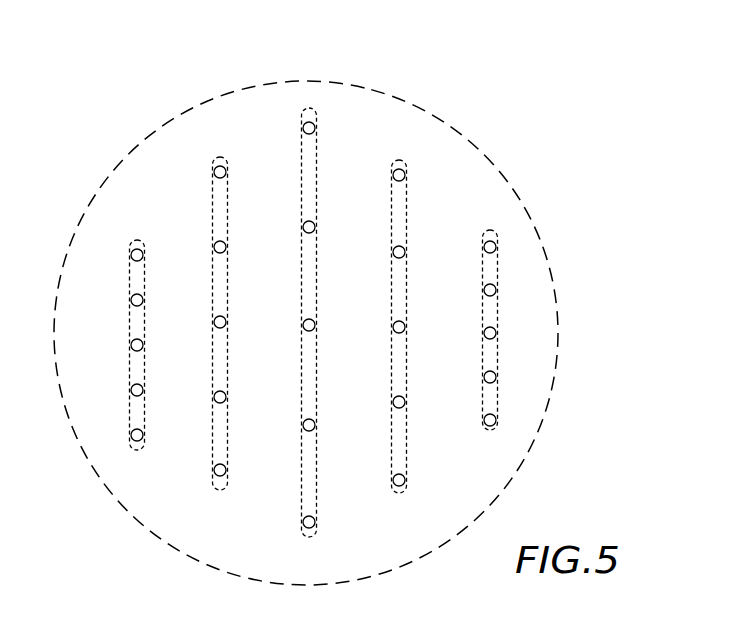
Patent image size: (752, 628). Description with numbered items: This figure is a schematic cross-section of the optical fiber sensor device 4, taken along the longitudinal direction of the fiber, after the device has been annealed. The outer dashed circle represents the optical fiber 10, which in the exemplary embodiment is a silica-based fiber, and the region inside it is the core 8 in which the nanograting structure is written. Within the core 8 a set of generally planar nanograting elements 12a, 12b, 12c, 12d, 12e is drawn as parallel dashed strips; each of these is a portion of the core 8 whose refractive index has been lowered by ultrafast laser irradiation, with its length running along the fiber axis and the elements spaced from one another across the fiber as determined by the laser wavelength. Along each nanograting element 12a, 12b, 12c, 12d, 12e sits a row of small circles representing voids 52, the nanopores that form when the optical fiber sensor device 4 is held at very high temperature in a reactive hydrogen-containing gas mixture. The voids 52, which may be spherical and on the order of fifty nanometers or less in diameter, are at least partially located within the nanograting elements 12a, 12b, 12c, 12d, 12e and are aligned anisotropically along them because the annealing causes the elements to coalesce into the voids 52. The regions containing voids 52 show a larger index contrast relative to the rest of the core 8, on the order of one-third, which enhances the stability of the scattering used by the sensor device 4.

The optical fiber sensor device 4 is at (426, 94).
The core 8 is at (538, 282).
The optical fiber 10 is at (483, 150).
The nanograting element 12a is at (138, 240).
The nanograting element 12b is at (212, 185).
The nanograting element 12c is at (302, 148).
The nanograting element 12d is at (392, 190).
The nanograting element 12e is at (482, 262).
The voids 52 is at (132, 302).